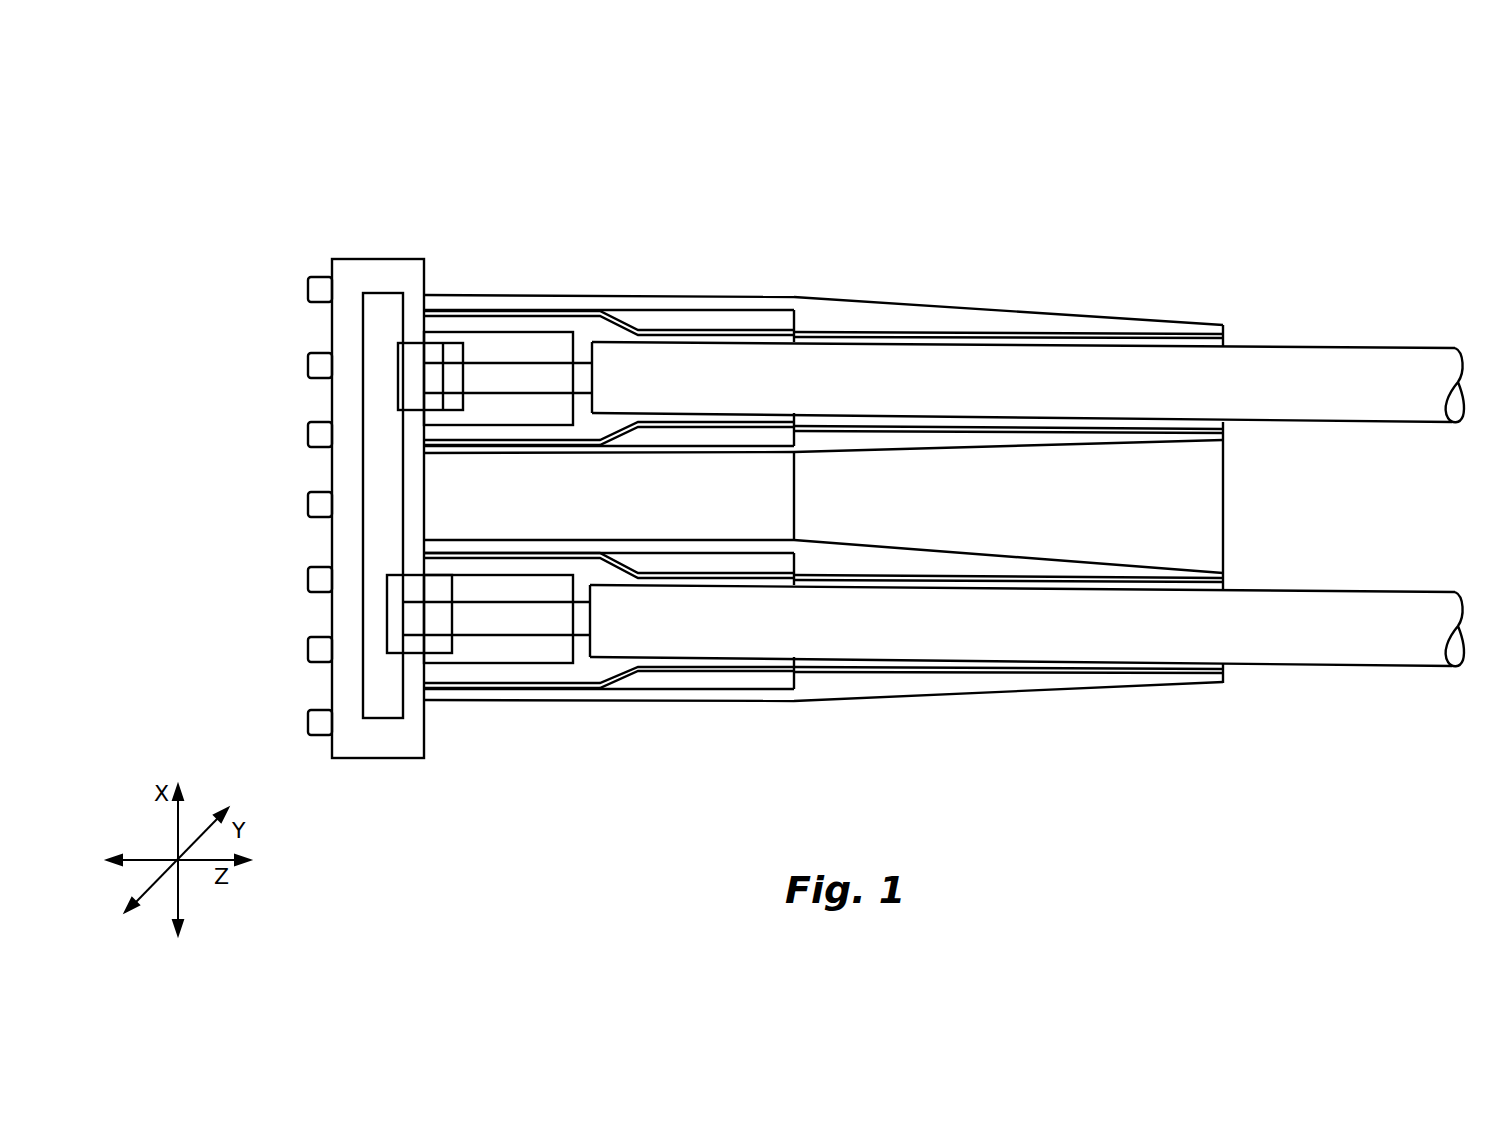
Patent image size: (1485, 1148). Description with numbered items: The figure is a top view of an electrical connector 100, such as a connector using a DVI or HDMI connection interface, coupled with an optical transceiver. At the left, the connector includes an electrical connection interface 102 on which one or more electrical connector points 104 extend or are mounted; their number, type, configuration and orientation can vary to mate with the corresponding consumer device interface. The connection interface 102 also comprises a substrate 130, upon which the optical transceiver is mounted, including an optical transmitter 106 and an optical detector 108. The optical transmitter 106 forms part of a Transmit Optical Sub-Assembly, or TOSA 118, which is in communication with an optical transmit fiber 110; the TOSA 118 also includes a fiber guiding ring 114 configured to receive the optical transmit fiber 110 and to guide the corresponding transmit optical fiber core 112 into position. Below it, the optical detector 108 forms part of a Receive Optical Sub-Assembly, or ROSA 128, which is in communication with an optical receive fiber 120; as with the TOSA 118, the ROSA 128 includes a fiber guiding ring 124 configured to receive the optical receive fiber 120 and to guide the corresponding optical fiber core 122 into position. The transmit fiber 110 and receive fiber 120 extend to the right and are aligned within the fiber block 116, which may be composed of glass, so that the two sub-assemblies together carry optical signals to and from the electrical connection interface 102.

The electrical connector 100 is at (845, 148).
The electrical connection interface 102 is at (365, 259).
The electrical connector points 104 is at (307, 288).
The optical transmitter 106 is at (435, 375).
The optical detector 108 is at (412, 617).
The optical transmit fiber 110 is at (902, 372).
The transmit optical fiber core 112 is at (550, 375).
The fiber guiding ring 114 is at (525, 407).
The fiber block 116 is at (1127, 327).
The Transmit Optical Sub-Assembly (TOSA) 118 is at (454, 206).
The optical receive fiber 120 is at (1007, 633).
The optical fiber core 122 is at (572, 617).
The fiber guiding ring 124 is at (532, 590).
The Receive Optical Sub-Assembly (ROSA) 128 is at (483, 756).
The substrate 130 is at (380, 527).